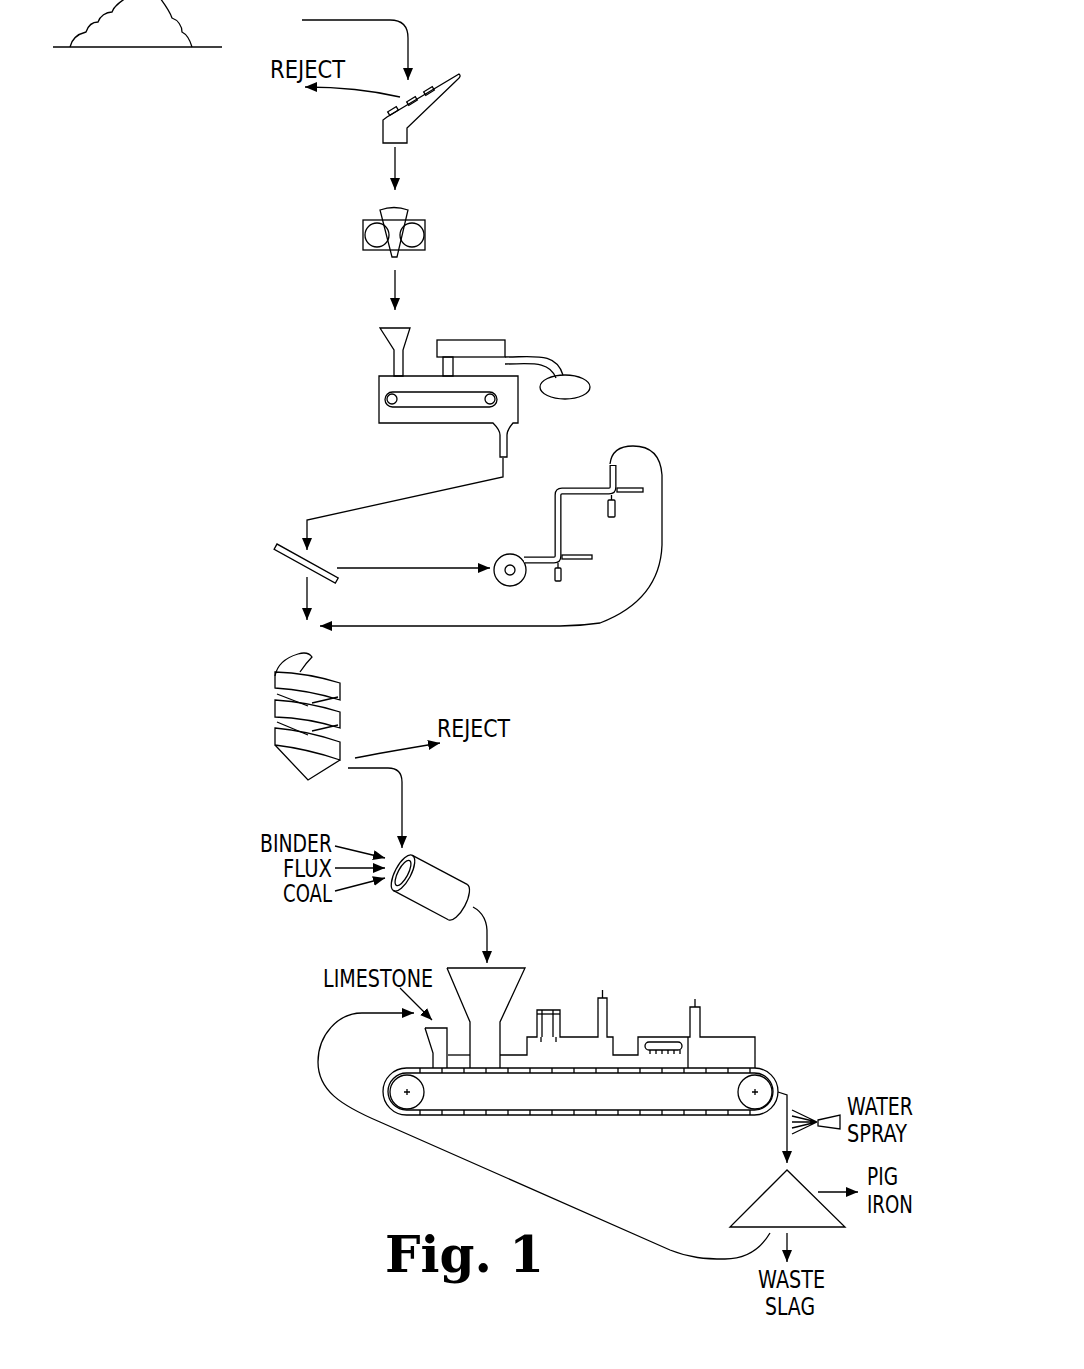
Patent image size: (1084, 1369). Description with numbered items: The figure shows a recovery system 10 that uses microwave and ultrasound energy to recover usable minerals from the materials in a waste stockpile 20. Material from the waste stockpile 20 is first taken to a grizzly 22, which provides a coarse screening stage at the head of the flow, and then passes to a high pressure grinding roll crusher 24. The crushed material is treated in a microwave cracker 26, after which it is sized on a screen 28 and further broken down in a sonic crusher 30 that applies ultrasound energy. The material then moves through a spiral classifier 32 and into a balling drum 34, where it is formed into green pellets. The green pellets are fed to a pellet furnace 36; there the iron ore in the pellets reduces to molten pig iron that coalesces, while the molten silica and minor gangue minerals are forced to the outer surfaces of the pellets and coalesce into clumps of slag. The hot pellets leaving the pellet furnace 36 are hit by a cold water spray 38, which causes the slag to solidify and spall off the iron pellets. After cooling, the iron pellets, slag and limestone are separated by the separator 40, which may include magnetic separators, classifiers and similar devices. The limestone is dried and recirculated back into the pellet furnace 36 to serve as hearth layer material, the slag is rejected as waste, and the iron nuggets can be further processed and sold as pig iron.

The recovery system 10 is at (657, 110).
The waste stockpile 20 is at (140, 50).
The grizzly 22 is at (438, 103).
The high pressure grinding roll (HPGR) crusher 24 is at (363, 233).
The microwave cracker 26 is at (379, 408).
The screen 28 is at (295, 545).
The sonic crusher 30 is at (604, 476).
The spiral classifier 32 is at (340, 706).
The balling drum 34 is at (448, 876).
The pellet furnace 36 is at (653, 1036).
The cold water spray 38 is at (828, 1115).
The separator 40 is at (760, 1197).